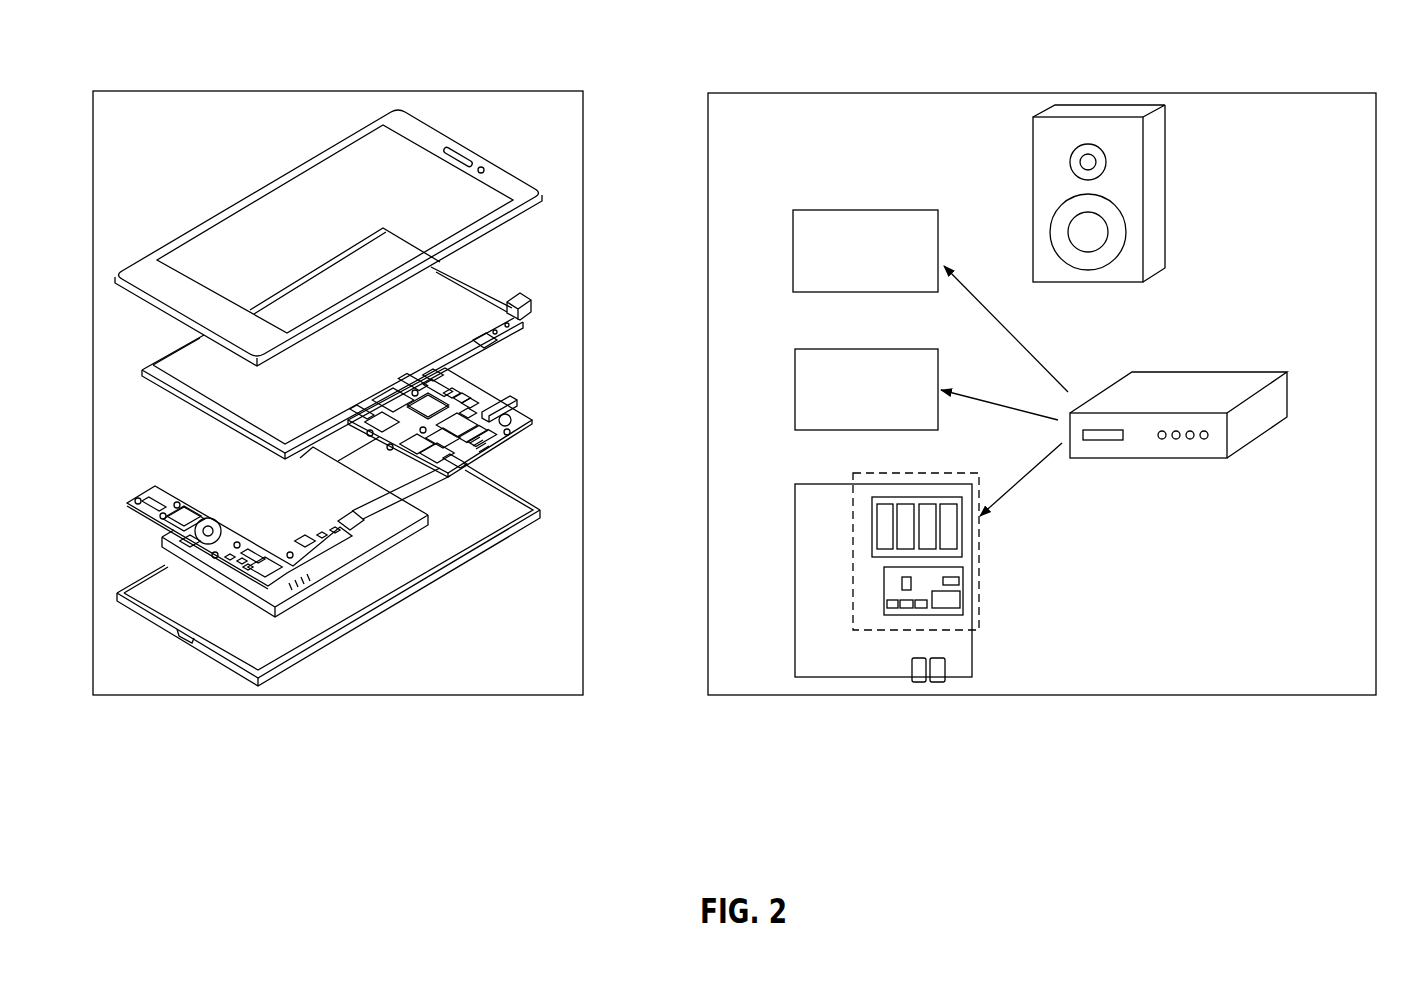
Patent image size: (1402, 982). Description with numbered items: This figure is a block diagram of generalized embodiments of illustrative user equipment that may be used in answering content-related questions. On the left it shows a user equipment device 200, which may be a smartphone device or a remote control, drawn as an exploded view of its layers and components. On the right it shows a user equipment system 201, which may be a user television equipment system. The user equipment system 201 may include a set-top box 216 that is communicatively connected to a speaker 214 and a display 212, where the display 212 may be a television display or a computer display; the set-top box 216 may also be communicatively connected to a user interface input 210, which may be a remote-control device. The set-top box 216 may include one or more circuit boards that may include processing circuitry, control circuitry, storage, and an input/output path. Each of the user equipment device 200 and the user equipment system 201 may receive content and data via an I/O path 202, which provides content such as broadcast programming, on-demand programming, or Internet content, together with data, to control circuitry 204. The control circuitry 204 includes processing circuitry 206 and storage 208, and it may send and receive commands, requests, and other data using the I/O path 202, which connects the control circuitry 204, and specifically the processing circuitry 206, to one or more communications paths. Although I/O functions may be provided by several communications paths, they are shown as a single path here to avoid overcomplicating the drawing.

The user equipment device 200 is at (187, 41).
The user equipment system 201 is at (1235, 54).
The I/O path 202 is at (197, 548).
The control circuitry 204 is at (851, 597).
The processing circuitry 206 is at (881, 576).
The storage 208 is at (869, 522).
The user interface input 210 is at (791, 251).
The display 212 is at (796, 357).
The speaker 214 is at (1030, 197).
The set-top box 216 is at (1172, 372).